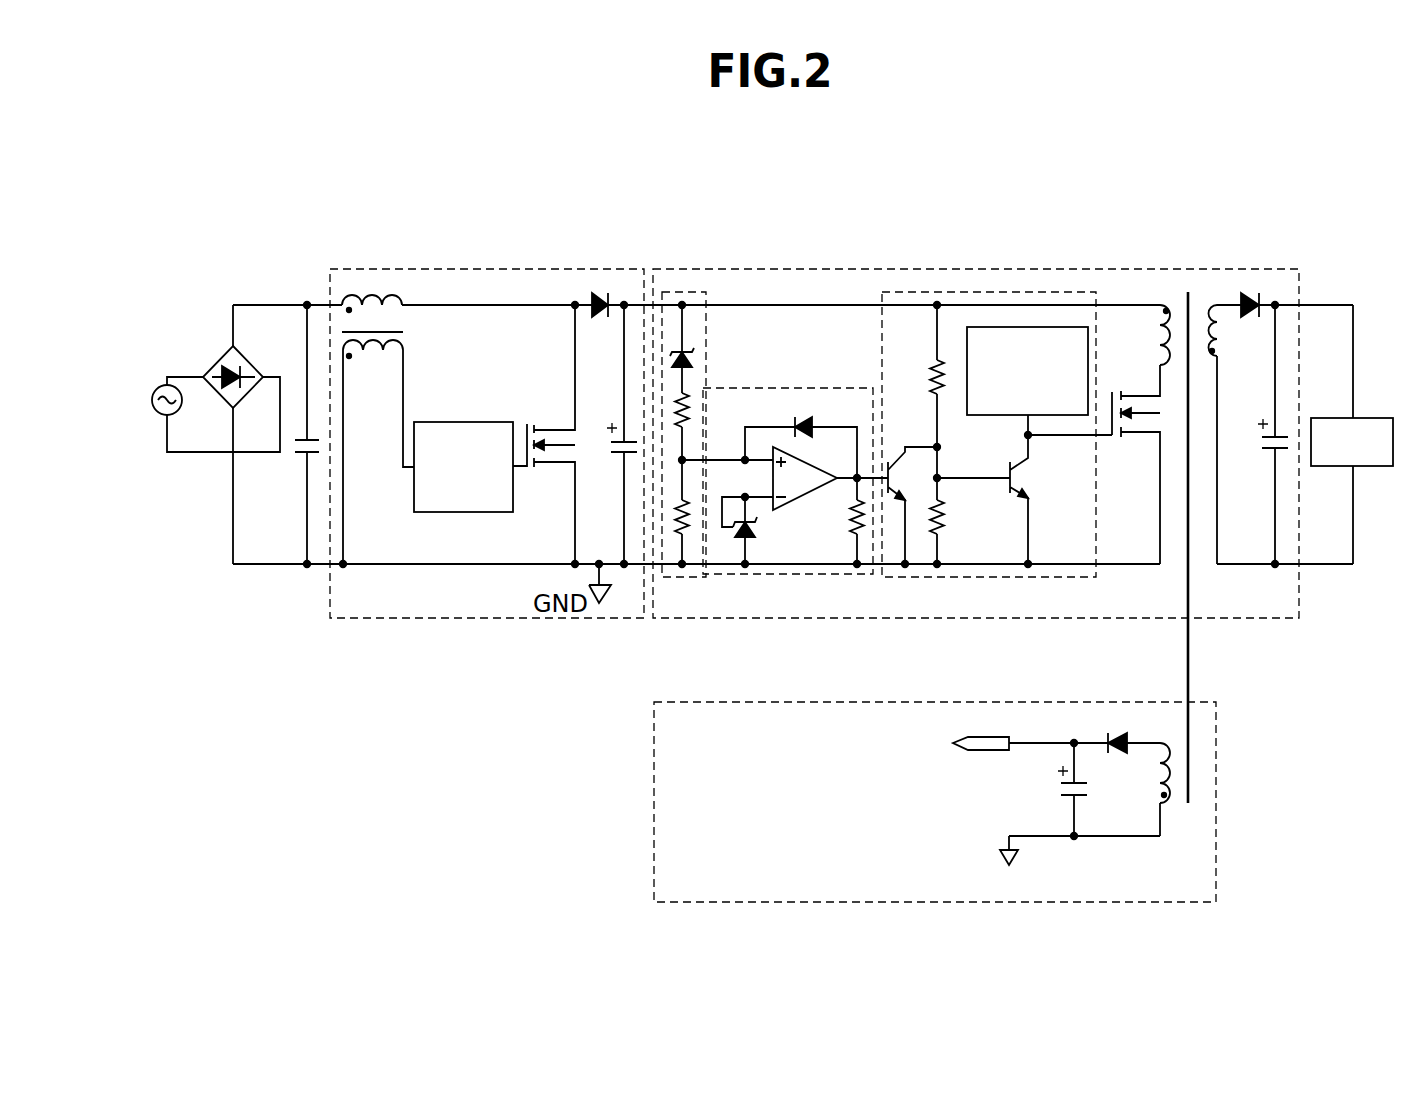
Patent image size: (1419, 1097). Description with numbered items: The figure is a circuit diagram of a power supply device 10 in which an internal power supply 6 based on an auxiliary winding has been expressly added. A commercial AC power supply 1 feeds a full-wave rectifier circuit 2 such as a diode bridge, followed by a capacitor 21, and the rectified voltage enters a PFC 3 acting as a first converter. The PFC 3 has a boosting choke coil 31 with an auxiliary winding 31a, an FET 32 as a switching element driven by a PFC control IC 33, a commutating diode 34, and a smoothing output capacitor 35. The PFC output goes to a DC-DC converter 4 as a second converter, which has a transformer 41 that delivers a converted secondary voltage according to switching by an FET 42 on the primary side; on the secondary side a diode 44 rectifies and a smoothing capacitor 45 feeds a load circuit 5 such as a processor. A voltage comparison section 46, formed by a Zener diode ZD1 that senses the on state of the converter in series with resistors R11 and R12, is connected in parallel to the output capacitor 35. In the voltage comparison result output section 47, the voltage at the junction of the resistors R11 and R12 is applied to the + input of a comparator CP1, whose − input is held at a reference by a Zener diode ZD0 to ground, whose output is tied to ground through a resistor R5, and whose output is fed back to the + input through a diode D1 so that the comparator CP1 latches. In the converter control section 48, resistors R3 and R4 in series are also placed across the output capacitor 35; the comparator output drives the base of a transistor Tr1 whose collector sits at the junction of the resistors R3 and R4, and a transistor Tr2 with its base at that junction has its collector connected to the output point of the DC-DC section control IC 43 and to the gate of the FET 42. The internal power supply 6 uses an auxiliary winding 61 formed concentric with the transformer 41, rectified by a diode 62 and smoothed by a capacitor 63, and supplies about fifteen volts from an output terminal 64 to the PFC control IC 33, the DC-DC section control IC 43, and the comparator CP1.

The AC power supply 1 is at (158, 392).
The full-wave rectifier circuit 2 is at (253, 362).
The PFC 3 is at (479, 620).
The DC-DC converter 4 is at (1275, 620).
The load circuit 5 is at (1380, 418).
The internal power supply 6 is at (1060, 905).
The power supply device 10 is at (817, 207).
The capacitor 21 is at (298, 456).
The boosting choke coil 31 is at (405, 310).
The auxiliary winding for a boosting choke coil 31a is at (405, 350).
The FET 32 is at (531, 428).
The PFC control IC 33 is at (492, 422).
The commutating diode 34 is at (598, 292).
The smoothing capacitor 35 is at (613, 450).
The transformer 41 is at (1193, 298).
The FET 42 is at (1113, 438).
The DC-DC section control IC 43 is at (1005, 327).
The diode 44 is at (1250, 293).
The smoothing capacitor 45 is at (1263, 450).
The voltage comparison section 46 is at (688, 290).
The voltage comparison result output section 47 is at (835, 388).
The converter control section 48 is at (916, 290).
The auxiliary winding 61 is at (1180, 815).
The diode 62 is at (1118, 755).
The capacitor 63 is at (1057, 795).
The output terminal 64 is at (975, 755).
The Zener diode ZD1 is at (694, 360).
The resistor R11 is at (690, 400).
The resistor R12 is at (688, 566).
The comparator CP1 is at (808, 495).
The diode D1 is at (823, 416).
The resistor R5 is at (841, 523).
The Zener diode ZD0 is at (771, 532).
The transistor Tr1 is at (912, 493).
The transistor Tr2 is at (984, 500).
The resistor R3 is at (918, 392).
The resistor R4 is at (956, 523).